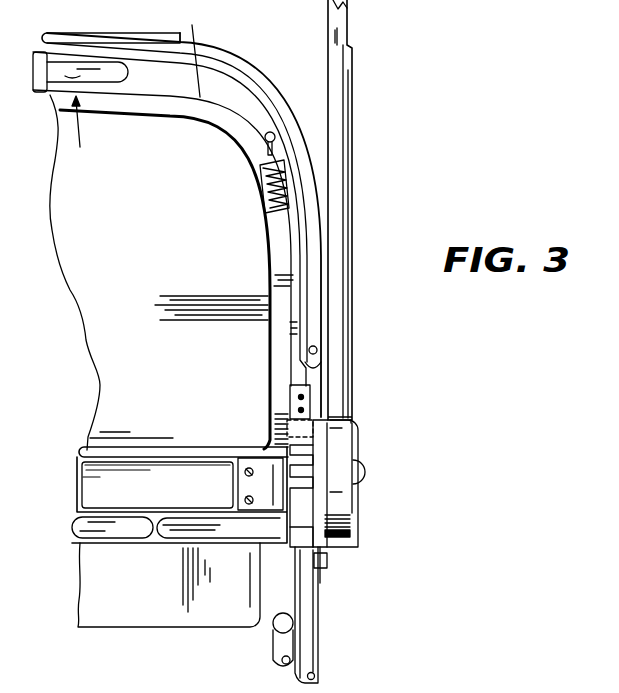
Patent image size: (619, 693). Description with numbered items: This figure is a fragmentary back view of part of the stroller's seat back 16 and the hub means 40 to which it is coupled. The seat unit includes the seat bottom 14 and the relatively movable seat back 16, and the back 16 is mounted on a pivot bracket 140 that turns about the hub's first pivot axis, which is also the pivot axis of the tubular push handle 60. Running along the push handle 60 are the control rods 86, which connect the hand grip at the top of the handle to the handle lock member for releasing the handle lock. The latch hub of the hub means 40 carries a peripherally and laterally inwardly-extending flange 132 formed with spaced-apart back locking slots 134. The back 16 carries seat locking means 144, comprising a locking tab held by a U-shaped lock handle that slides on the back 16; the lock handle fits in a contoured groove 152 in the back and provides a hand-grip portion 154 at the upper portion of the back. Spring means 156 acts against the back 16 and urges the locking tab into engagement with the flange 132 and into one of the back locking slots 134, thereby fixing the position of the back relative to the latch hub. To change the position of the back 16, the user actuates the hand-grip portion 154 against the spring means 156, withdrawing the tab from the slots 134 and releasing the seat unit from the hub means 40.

The seat bottom 14 is at (160, 608).
The seat back 16 is at (108, 317).
The hub means 40 is at (349, 555).
The push handle 60 is at (345, 23).
The control rods 86 is at (350, 105).
The flange 132 is at (307, 500).
The back locking slots 134 is at (305, 482).
The pivot bracket 140 is at (265, 477).
The seat locking means 144 is at (291, 405).
The contoured groove 152 is at (247, 83).
The hand-grip portion 154 is at (72, 64).
The spring means 156 is at (263, 193).